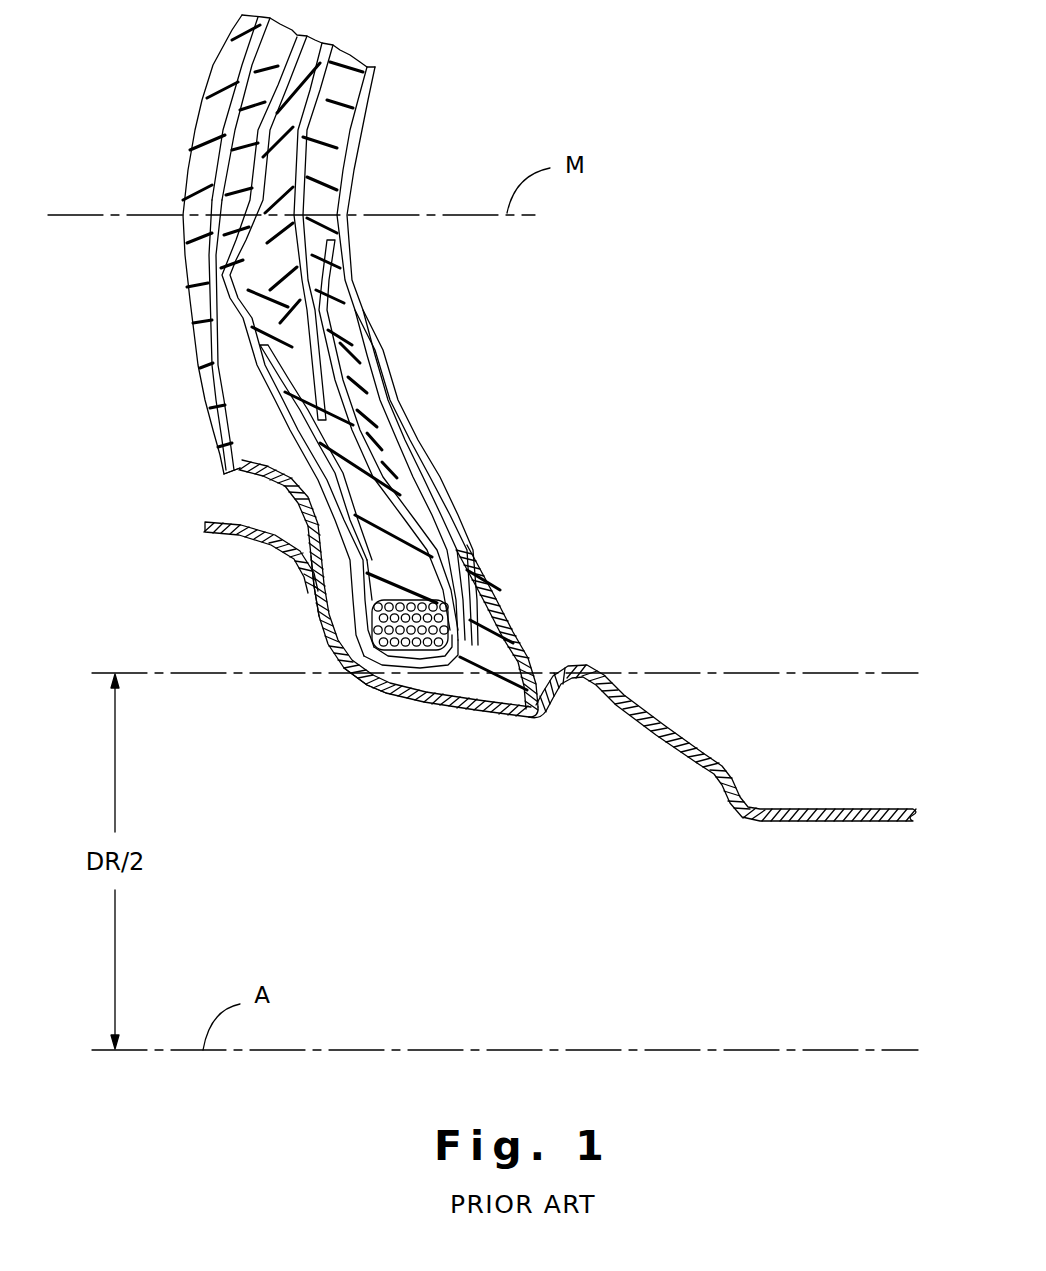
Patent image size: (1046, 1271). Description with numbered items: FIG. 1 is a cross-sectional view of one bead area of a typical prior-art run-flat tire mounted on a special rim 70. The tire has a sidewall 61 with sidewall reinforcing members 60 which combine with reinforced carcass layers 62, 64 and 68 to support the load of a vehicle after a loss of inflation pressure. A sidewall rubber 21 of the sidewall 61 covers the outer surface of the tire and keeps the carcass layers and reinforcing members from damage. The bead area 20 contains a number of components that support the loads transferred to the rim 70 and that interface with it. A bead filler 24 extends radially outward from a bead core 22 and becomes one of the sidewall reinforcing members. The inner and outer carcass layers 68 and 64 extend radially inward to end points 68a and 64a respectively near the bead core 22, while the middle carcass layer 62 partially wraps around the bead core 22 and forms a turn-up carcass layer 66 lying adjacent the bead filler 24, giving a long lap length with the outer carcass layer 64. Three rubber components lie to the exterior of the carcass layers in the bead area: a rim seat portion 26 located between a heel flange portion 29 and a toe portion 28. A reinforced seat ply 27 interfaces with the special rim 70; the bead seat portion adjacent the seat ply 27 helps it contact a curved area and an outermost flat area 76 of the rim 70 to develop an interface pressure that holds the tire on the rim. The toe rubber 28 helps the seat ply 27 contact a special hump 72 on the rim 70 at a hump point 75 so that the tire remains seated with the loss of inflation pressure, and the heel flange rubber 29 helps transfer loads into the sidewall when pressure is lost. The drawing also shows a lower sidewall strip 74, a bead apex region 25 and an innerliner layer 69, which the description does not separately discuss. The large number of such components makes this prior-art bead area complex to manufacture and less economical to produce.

The bead area 20 is at (500, 562).
The sidewall rubber 21 is at (200, 305).
The bead core 22 is at (470, 660).
The bead filler 24 is at (383, 497).
The bead apex 25 is at (407, 660).
The rim seat portion 26 is at (343, 627).
The reinforced seat ply 27 is at (313, 600).
The toe portion 28 is at (490, 643).
The heel flange portion 29 is at (250, 422).
The sidewall reinforcing members 60 is at (367, 98).
The sidewall 61 is at (183, 267).
The middle carcass layer 62 is at (213, 328).
The outer carcass layer 64 is at (225, 407).
The end point of outer carcass layer 64a is at (347, 630).
The turn-up carcass layer 66 is at (248, 472).
The inner carcass layer 68 is at (307, 305).
The end point of inner carcass layer 68a is at (467, 655).
The innerliner 69 is at (348, 173).
The rim 70 is at (725, 765).
The hump 72 is at (600, 683).
The rim flange protector strip 74 is at (233, 530).
The hump point 75 is at (545, 713).
The outermost flat area 76 is at (350, 683).